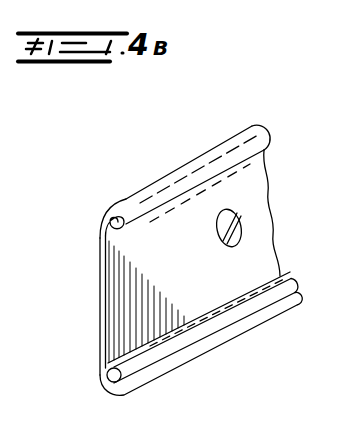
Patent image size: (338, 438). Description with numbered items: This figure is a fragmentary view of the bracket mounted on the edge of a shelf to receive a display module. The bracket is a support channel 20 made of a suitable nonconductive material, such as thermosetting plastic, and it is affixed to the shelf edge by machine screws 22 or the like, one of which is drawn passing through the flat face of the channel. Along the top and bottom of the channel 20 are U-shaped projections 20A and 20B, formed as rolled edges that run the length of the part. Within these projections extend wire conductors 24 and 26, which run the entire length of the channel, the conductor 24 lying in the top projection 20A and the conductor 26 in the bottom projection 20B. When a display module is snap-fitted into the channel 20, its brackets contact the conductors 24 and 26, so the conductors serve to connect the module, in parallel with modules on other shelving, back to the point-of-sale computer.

The support channel 20 is at (114, 292).
The U-shaped projection 20A is at (240, 133).
The U-shaped projection 20B is at (259, 309).
The machine screw 22 is at (243, 228).
The wire conductor 24 is at (103, 238).
The wire conductor 26 is at (283, 272).